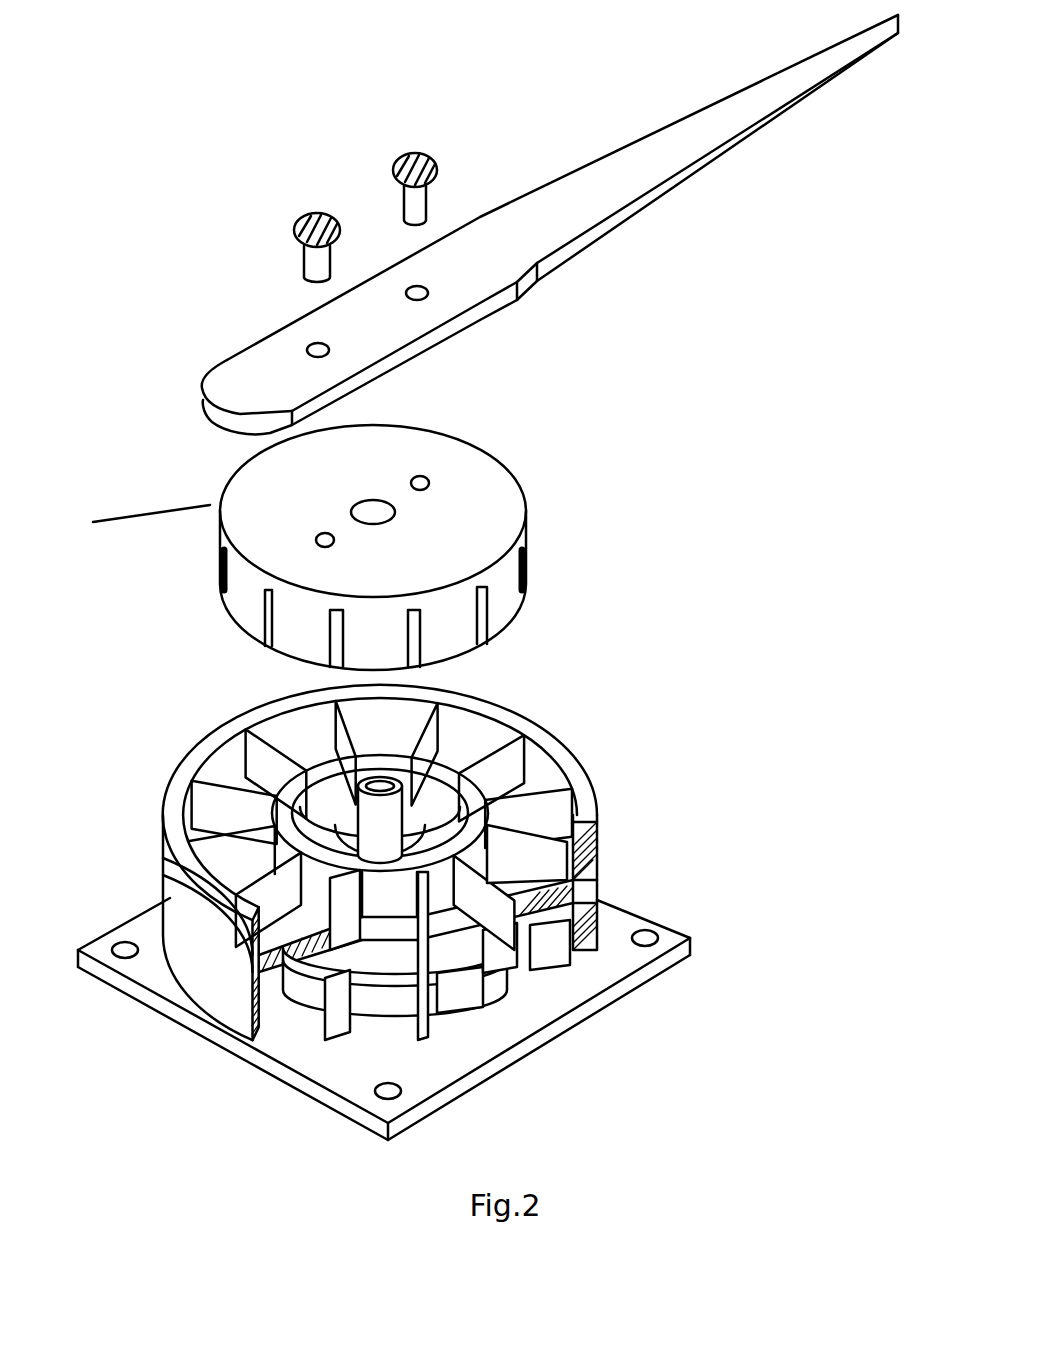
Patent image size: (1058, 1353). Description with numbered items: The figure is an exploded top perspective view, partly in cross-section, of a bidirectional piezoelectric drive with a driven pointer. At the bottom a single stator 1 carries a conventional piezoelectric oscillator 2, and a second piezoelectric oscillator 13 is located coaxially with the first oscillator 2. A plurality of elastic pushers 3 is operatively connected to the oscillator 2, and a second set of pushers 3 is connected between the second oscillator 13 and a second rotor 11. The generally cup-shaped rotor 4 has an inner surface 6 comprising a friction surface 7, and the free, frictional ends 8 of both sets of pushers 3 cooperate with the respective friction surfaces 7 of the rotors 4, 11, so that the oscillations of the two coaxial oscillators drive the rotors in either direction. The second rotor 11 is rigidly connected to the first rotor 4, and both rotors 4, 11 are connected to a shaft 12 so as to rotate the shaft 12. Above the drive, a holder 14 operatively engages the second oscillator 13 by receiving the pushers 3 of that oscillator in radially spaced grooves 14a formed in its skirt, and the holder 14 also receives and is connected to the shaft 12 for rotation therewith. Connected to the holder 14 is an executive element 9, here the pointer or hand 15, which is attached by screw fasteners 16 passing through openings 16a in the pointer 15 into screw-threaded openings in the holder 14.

The stator 1 is at (345, 1068).
The piezoelectric oscillator 2 is at (450, 970).
The elastic pushers 3 is at (500, 987).
The rotor 4 is at (216, 995).
The inner surface 6 is at (617, 963).
The friction surface 7 is at (583, 910).
The free frictional ends 8 is at (530, 1003).
The executive element 9 is at (602, 190).
The second rotor 11 is at (187, 887).
The shaft 12 is at (383, 830).
The second piezoelectric oscillator 13 is at (283, 817).
The holder 14 is at (482, 513).
The radially spaced grooves 14a is at (487, 627).
The pointer 15 is at (497, 253).
The screw fasteners 16 is at (393, 180).
The openings 16a is at (318, 537).